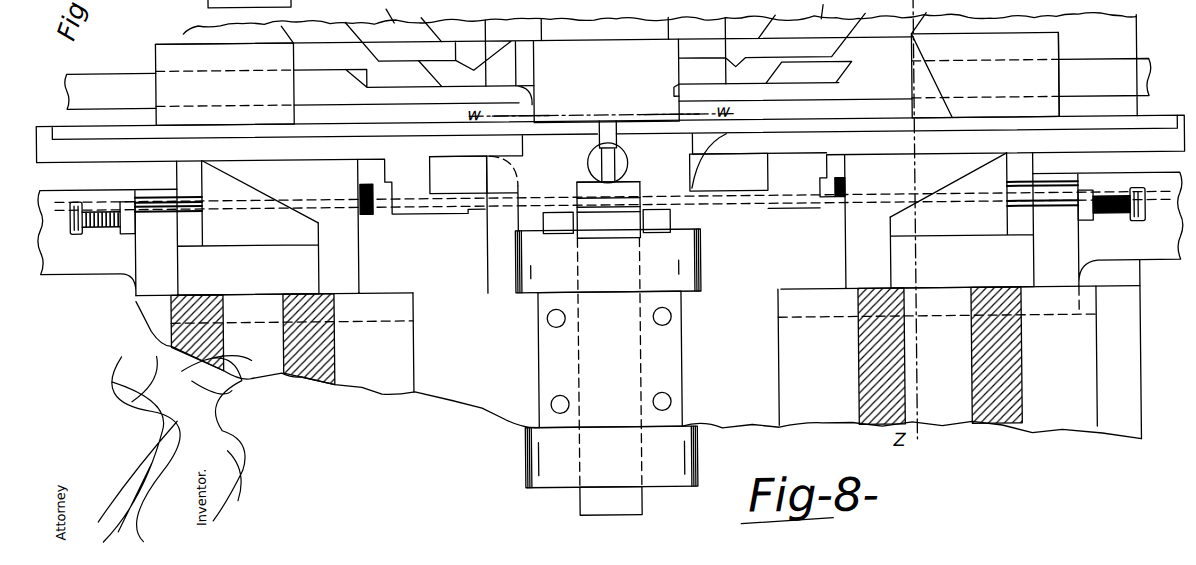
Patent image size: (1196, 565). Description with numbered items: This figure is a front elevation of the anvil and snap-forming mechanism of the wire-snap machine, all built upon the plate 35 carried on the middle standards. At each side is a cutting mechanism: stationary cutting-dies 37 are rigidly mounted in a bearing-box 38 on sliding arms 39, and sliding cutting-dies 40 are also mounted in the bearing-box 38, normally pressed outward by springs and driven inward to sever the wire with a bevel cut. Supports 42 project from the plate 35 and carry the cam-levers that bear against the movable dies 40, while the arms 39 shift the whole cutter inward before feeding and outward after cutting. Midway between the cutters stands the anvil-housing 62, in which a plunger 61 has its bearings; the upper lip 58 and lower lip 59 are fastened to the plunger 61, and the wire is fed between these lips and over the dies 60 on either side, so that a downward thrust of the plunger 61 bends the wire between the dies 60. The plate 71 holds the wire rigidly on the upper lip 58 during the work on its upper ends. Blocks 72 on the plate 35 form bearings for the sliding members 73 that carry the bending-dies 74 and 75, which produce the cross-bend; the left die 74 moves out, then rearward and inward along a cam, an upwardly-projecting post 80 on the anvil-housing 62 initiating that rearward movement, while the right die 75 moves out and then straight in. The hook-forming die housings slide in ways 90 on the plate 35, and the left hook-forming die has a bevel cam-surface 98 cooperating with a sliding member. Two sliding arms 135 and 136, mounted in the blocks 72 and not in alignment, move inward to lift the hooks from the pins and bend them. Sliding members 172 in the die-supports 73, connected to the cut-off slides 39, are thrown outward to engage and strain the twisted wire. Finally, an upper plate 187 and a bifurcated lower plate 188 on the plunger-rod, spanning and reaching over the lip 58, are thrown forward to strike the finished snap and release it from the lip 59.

The plate 35 is at (1031, 63).
The stationary cutting-dies 37 is at (637, 224).
The bearing-box 38 is at (606, 274).
The sliding arms 39 is at (610, 234).
The sliding cutting-dies 40 is at (605, 195).
The supports 42 is at (223, 355).
The upper lip 58 is at (630, 193).
The lower lip 59 is at (596, 222).
The dies 60 is at (661, 236).
The plunger 61 is at (611, 471).
The anvil-housing 62 is at (610, 359).
The plate 71 is at (625, 241).
The blocks 72 is at (533, 51).
The sliding members 73 is at (610, 166).
The bending-die 74 is at (458, 175).
The bending-die 75 is at (728, 162).
The post 80 is at (487, 236).
The ways 90 is at (377, 11).
The bevel cam-surface 98 is at (824, 9).
The sliding arm 135 is at (299, 84).
The sliding arm 136 is at (793, 81).
The sliding members 172 is at (650, 136).
The upper plate 187 is at (605, 130).
The lower plate 188 is at (580, 200).